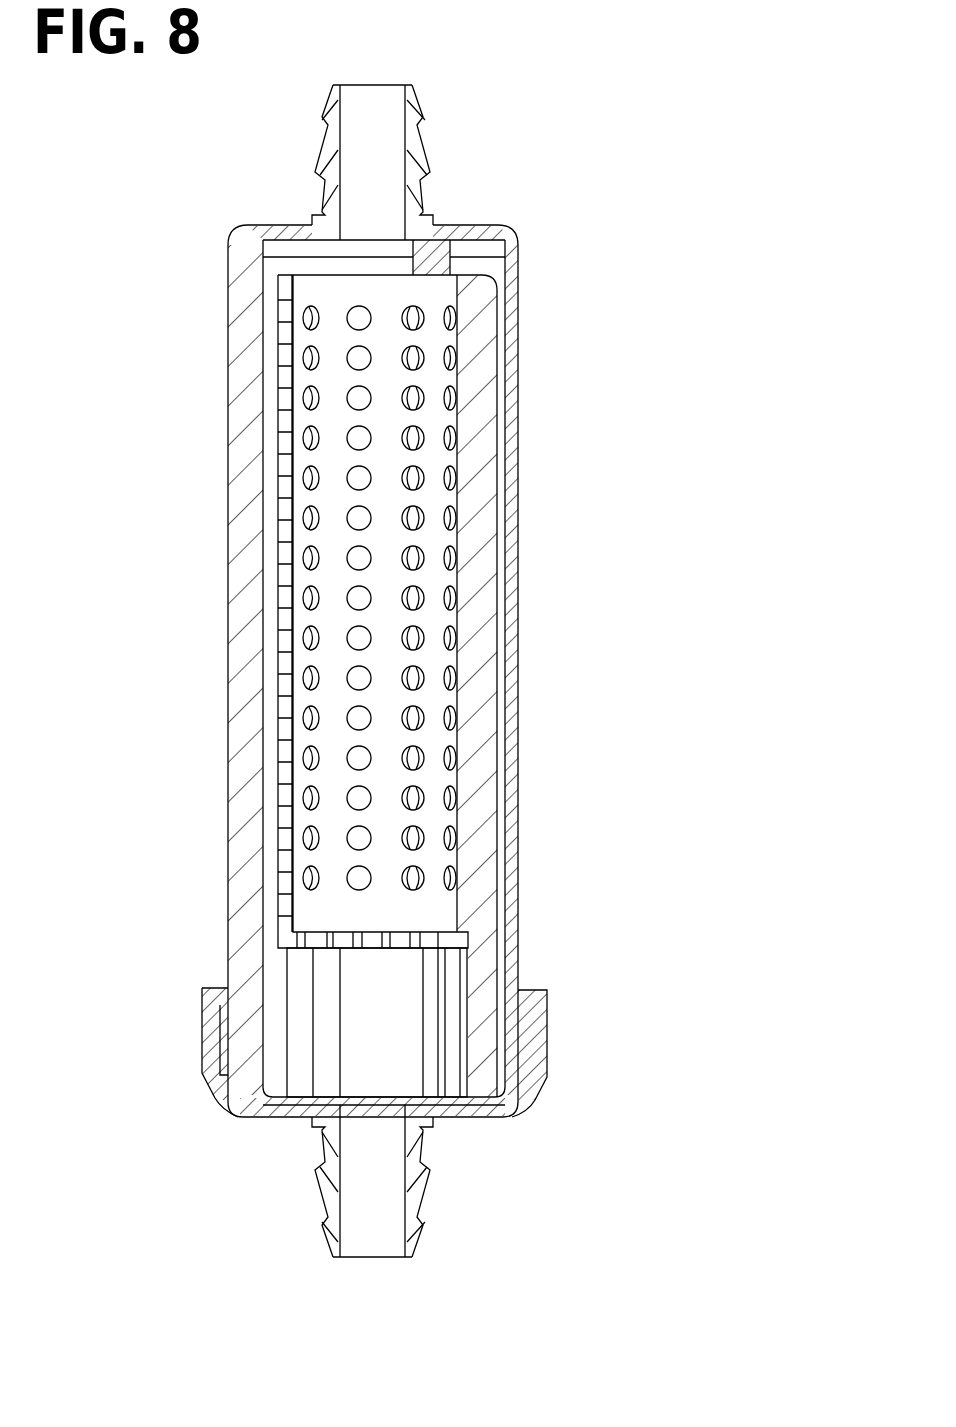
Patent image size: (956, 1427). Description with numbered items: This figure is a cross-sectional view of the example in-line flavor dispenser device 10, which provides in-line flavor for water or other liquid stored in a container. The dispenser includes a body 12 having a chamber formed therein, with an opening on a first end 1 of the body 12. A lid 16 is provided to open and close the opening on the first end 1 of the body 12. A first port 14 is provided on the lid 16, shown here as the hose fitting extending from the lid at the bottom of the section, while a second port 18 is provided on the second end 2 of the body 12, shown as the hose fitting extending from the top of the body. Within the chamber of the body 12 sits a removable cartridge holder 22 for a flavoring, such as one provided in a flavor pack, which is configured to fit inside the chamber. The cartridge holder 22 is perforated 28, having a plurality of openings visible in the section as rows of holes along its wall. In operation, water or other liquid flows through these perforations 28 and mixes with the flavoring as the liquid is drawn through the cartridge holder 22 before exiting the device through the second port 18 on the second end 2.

The in-line flavor dispenser device 10 is at (626, 121).
The body 12 is at (513, 590).
The second end 2 is at (456, 232).
The second port 18 is at (402, 86).
The removable cartridge holder 22 is at (457, 913).
The perforations 28 is at (422, 803).
The first end 1 is at (468, 1118).
The lid 16 is at (546, 1040).
The first port 14 is at (385, 1258).